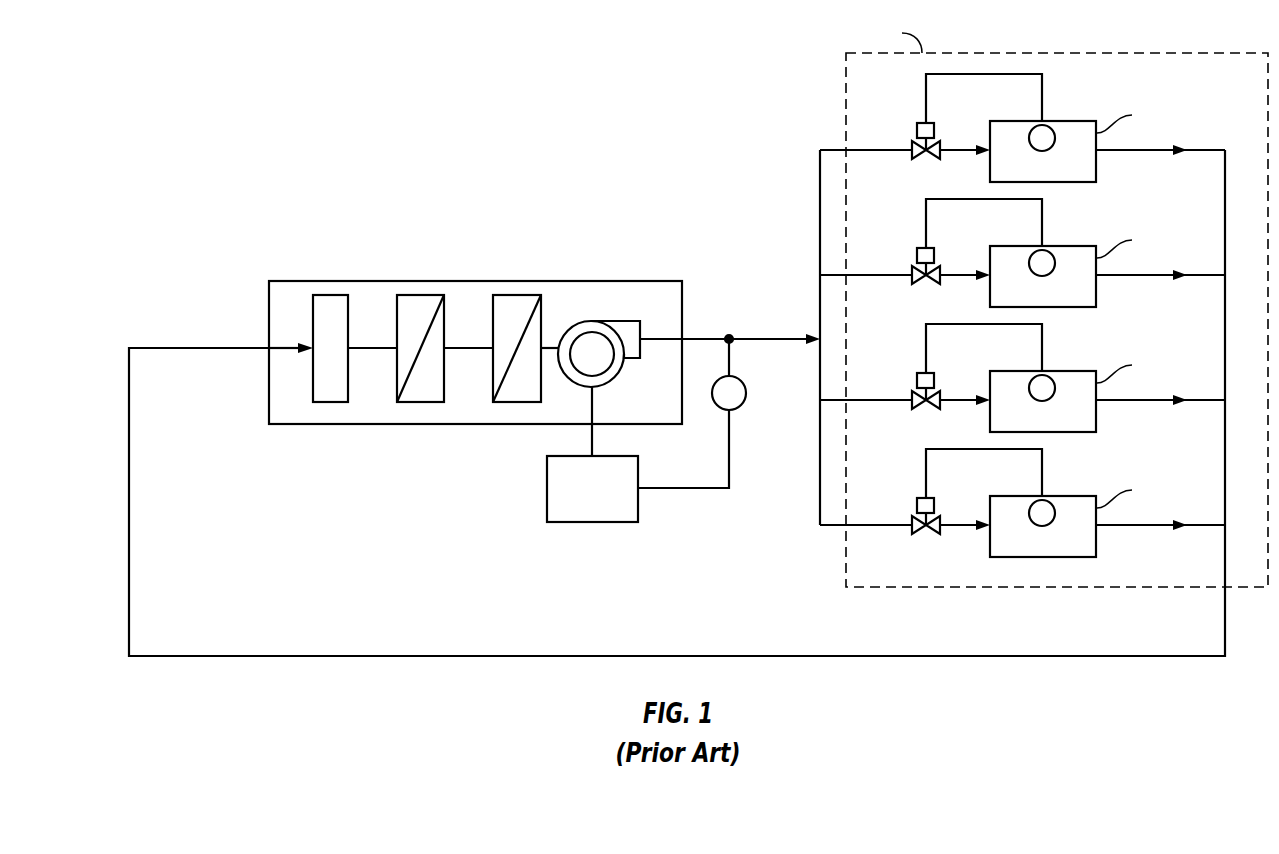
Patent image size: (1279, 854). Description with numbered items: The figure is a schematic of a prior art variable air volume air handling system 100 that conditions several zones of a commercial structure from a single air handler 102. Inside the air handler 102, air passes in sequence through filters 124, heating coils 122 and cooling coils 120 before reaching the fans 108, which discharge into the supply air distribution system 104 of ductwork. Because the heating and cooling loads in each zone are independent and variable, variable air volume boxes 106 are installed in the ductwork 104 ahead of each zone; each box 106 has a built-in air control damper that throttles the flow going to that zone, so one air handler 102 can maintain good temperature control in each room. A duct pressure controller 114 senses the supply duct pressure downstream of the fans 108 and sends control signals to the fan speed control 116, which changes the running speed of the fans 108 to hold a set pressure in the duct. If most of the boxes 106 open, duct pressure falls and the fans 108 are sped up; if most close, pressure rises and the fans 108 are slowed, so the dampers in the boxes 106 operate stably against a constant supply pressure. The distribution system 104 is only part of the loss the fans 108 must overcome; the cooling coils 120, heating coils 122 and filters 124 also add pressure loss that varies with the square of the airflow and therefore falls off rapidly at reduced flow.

The variable air volume air handling system 100 is at (627, 162).
The air handler 102 is at (380, 426).
The supply air distribution system 104 is at (129, 502).
The variable air volume boxes 106 is at (917, 130).
The fans 108 is at (592, 321).
The duct pressure controller 114 is at (746, 393).
The fan speed control 116 is at (547, 490).
The cooling coils 120 is at (518, 295).
The heating coils 122 is at (422, 295).
The filters 124 is at (331, 295).